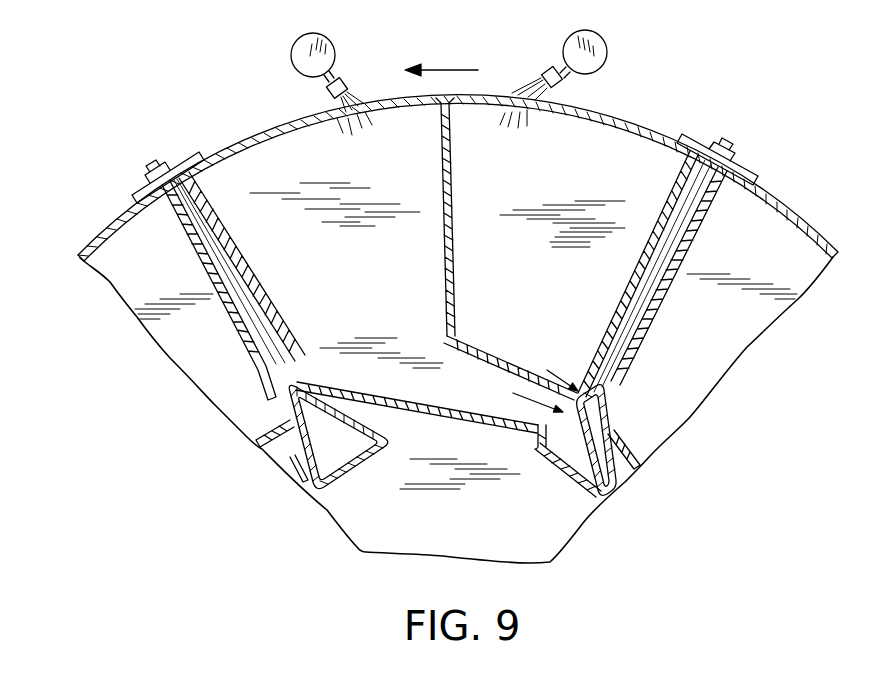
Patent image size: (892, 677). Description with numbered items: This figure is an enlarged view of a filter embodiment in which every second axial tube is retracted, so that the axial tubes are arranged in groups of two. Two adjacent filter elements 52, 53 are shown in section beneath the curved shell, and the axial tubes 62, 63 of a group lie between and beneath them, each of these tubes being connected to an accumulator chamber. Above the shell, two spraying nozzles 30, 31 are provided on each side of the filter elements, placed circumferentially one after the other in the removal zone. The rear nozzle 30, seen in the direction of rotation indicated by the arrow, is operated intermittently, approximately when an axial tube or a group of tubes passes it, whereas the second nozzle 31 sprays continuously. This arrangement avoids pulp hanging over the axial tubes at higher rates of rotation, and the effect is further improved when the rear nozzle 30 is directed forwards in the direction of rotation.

The filter element 52 is at (249, 162).
The filter element 53 is at (622, 152).
The axial tube 62 is at (567, 453).
The axial tube 63 is at (597, 467).
The spraying nozzle 30 is at (547, 67).
The spraying nozzle 31 is at (347, 78).